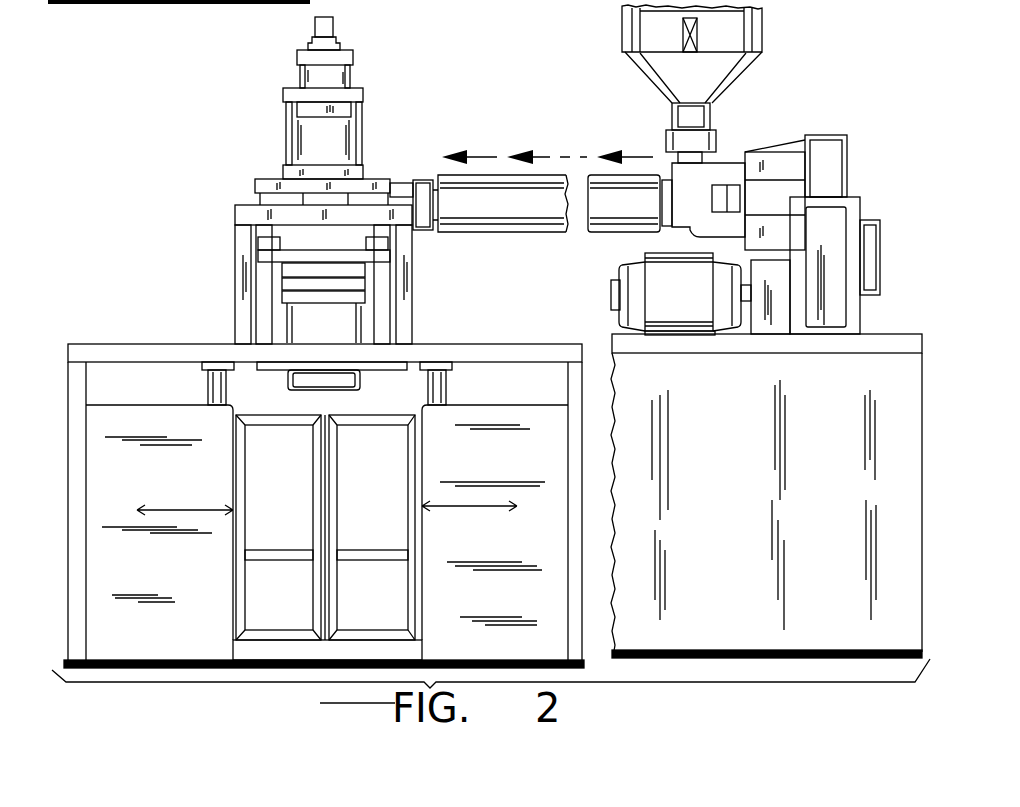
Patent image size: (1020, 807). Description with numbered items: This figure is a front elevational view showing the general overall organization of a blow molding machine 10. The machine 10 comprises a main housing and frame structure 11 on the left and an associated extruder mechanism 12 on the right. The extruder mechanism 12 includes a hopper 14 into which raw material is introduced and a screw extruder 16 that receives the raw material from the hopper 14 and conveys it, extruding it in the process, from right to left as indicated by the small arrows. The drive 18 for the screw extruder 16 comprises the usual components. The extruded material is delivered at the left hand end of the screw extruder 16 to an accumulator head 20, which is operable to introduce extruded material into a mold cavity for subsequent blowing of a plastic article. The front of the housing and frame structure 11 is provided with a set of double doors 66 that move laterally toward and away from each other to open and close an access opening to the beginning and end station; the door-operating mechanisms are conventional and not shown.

The blow molding machine 10 is at (142, 100).
The main housing and frame structure 11 is at (68, 344).
The extruder mechanism 12 is at (867, 186).
The hopper 14 is at (765, 33).
The screw extruder 16 is at (433, 172).
The drive 18 is at (618, 270).
The accumulator head 20 is at (392, 177).
The double doors 66 is at (300, 503).